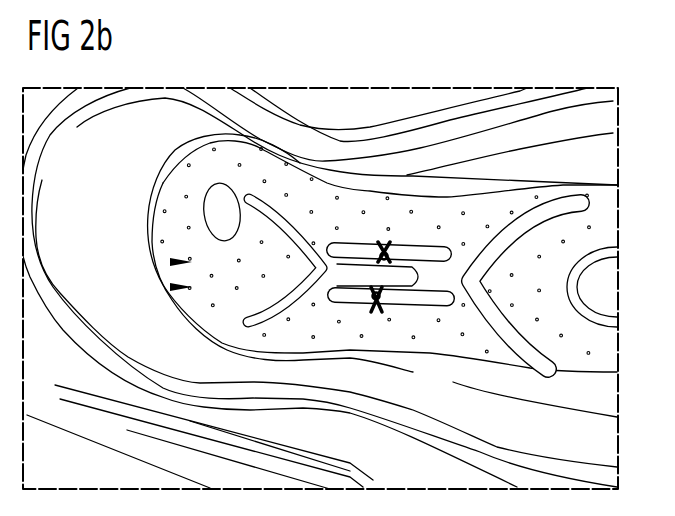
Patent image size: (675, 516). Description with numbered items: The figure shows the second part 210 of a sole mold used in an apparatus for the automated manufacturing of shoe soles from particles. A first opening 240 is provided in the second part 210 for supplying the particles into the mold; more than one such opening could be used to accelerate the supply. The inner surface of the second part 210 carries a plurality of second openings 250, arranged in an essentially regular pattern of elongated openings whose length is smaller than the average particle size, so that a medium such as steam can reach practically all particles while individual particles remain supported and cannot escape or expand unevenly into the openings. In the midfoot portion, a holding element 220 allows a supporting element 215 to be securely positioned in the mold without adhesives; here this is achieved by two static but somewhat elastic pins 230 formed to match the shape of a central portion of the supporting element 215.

The second part of the mold 210 is at (293, 147).
The supporting element 215 is at (524, 221).
The holding element 220 is at (423, 307).
The static pins 230 is at (386, 242).
The first opening 240 is at (217, 212).
The second openings 250 is at (172, 287).